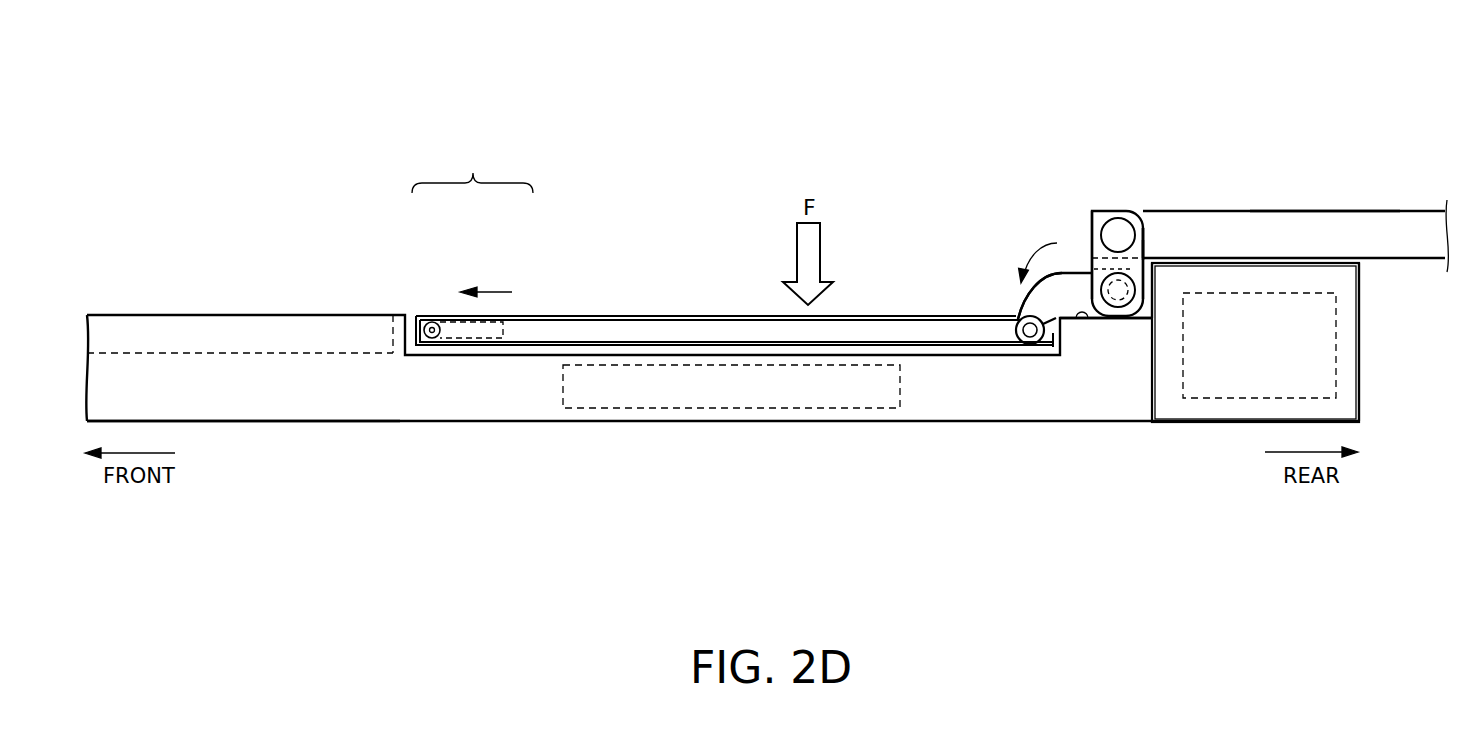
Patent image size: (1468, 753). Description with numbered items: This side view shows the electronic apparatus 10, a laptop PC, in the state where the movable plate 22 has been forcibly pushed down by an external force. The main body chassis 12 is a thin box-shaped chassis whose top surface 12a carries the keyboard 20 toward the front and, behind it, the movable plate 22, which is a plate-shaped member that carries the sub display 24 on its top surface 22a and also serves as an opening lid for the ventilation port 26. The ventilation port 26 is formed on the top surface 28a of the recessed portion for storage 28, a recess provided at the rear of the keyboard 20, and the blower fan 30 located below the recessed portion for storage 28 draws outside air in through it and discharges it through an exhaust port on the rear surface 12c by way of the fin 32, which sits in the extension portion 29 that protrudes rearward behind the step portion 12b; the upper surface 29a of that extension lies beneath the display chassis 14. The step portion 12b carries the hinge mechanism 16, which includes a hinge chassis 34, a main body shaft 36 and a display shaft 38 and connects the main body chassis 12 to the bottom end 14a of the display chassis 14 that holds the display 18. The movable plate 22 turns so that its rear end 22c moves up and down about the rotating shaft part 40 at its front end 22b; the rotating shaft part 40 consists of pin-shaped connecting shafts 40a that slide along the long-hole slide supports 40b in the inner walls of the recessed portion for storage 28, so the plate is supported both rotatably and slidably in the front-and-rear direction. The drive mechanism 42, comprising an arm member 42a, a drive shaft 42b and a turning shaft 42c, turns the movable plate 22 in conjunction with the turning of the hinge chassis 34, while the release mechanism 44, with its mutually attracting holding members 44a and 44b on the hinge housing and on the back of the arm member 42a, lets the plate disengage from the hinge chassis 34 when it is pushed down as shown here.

The electronic apparatus 10 is at (140, 63).
The main body chassis 12 is at (578, 427).
The top surface 12a is at (270, 315).
The step portion 12b is at (1084, 322).
The rear surface 12c is at (1360, 355).
The display chassis 14 is at (1388, 205).
The bottom end 14a is at (1093, 213).
The hinge mechanism 16 is at (1153, 220).
The display 18 is at (1317, 210).
The keyboard 20 is at (235, 353).
The movable plate 22 is at (703, 306).
The top surface 22a is at (640, 316).
The front end 22b is at (403, 342).
The rear end 22c is at (1052, 333).
The sub display 24 is at (720, 266).
The ventilation port 26 is at (734, 411).
The recessed portion for storage 28 is at (882, 316).
The top surface 28a is at (757, 346).
The extension portion 29 is at (1345, 306).
The upper surface of rear wall 29a is at (1268, 262).
The blower fan 30 is at (672, 408).
The fin 32 is at (1222, 399).
The hinge chassis 34 is at (1147, 252).
The main body shaft 36 is at (1118, 292).
The display shaft 38 is at (1118, 235).
The rotating shaft part 40 is at (472, 169).
The connecting shaft 40a is at (437, 322).
The slide support 40b is at (512, 330).
The drive mechanism 42 is at (1027, 362).
The arm member 42a is at (1036, 308).
The drive shaft 42b is at (1015, 328).
The turning shaft 42c is at (1155, 312).
The release mechanism 44 is at (1154, 180).
The holding member 44a is at (1147, 241).
The holding member 44b is at (1092, 225).